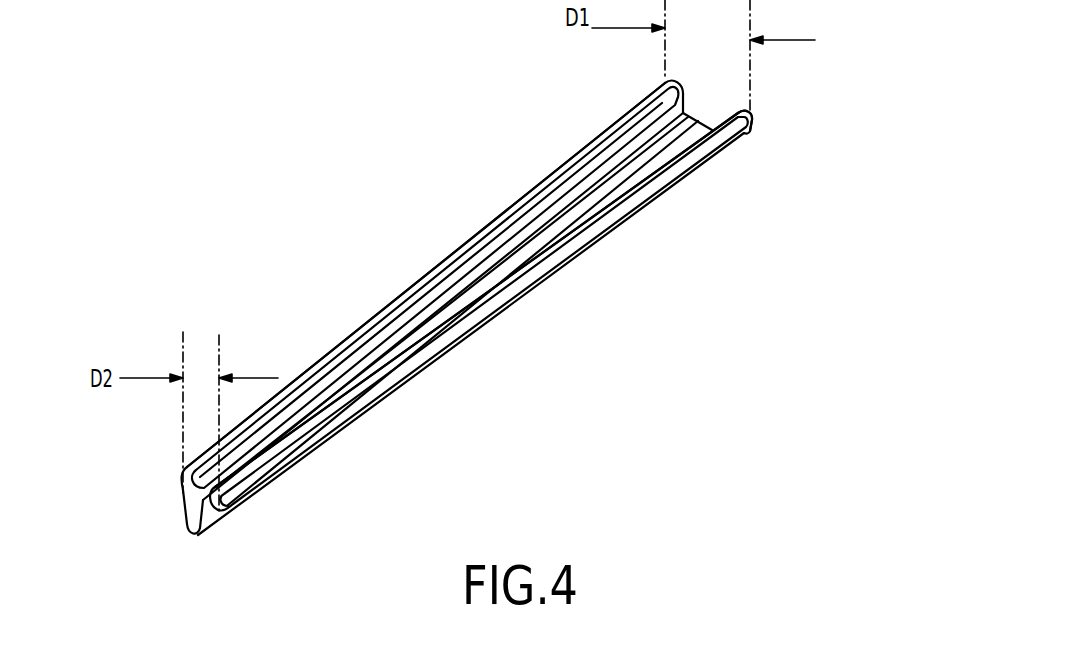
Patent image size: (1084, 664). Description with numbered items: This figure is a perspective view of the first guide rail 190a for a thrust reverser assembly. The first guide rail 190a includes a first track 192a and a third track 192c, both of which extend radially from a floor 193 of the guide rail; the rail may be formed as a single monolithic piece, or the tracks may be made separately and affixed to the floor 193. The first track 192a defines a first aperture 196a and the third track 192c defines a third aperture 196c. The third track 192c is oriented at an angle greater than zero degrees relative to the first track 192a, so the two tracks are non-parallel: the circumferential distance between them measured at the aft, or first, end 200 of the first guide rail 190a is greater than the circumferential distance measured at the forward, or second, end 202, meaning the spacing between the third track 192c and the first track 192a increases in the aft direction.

The first guide rail 190a is at (334, 216).
The first track 192a is at (182, 492).
The third track 192c is at (208, 514).
The floor 193 is at (661, 164).
The first aperture 196a is at (600, 136).
The third aperture 196c is at (598, 243).
The aft end 200 is at (699, 121).
The forward end 202 is at (192, 533).